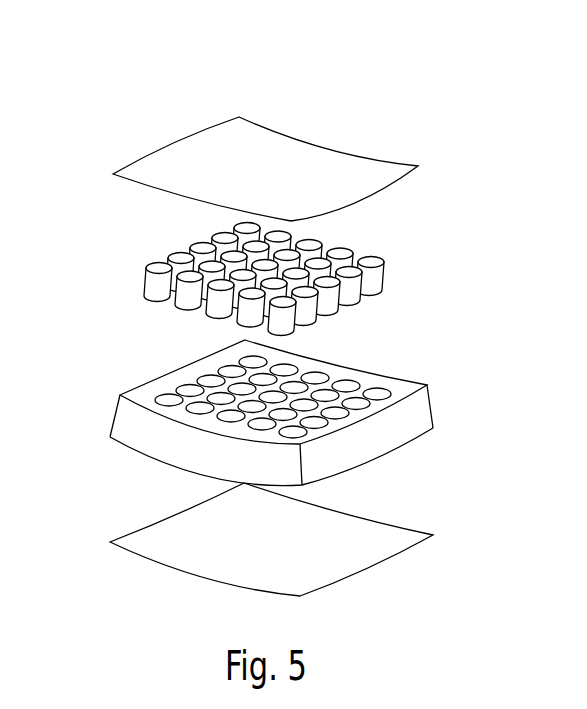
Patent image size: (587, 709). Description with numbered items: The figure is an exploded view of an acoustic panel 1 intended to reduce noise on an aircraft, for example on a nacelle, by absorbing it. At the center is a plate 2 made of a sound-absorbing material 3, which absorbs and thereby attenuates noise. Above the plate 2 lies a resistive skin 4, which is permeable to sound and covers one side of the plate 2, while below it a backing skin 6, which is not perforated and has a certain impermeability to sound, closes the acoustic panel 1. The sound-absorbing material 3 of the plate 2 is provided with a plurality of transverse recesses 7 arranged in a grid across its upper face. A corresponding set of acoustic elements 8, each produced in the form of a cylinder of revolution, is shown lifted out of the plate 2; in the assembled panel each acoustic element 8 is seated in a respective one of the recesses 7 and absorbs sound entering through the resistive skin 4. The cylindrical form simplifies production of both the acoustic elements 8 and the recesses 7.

The acoustic panel 1 is at (119, 130).
The plate 2 is at (240, 408).
The sound-absorbing material 3 is at (144, 436).
The resistive skin 4 is at (396, 183).
The backing skin 6 is at (389, 559).
The transverse recesses 7 is at (347, 383).
The acoustic elements 8 is at (125, 273).